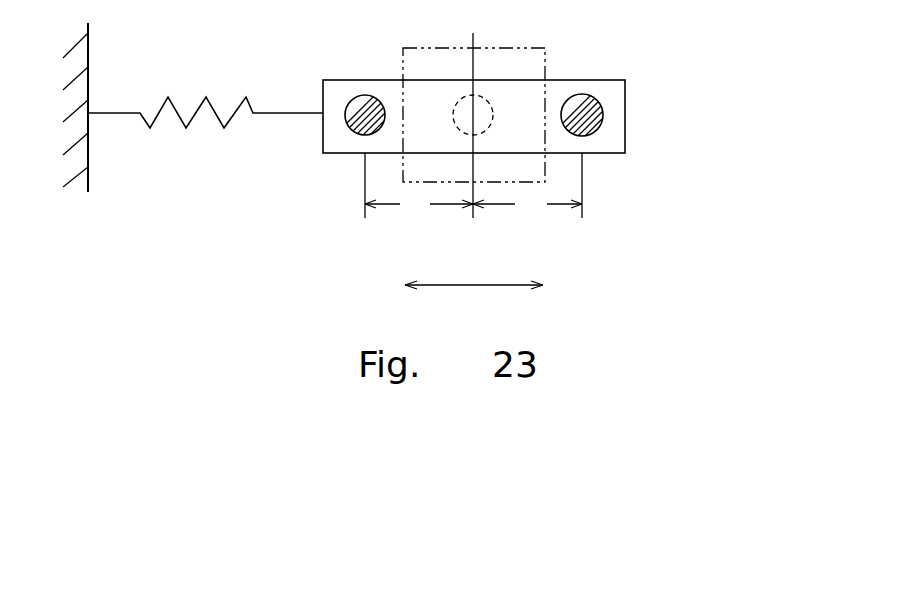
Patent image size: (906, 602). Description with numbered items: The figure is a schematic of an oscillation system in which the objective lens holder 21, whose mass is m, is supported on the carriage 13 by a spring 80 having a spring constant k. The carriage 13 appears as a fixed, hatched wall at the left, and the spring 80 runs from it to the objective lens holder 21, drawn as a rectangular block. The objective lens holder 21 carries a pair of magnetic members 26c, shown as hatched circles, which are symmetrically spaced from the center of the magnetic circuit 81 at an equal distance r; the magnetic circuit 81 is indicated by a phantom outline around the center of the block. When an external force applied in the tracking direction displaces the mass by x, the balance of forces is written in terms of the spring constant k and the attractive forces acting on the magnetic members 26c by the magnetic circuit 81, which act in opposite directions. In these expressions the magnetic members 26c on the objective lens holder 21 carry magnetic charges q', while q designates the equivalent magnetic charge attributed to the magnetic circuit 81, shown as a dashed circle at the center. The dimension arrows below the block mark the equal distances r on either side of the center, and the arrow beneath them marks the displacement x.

The carriage 13 is at (88, 155).
The spring 80 is at (205, 115).
The spring constant k is at (187, 73).
The objective lens holder 21 is at (563, 90).
The magnetic members 26c is at (355, 122).
The magnetic circuit 81 is at (549, 62).
The equivalent magnetic charge q is at (484, 100).
The equal distance r is at (473, 185).
The displacement x is at (474, 272).